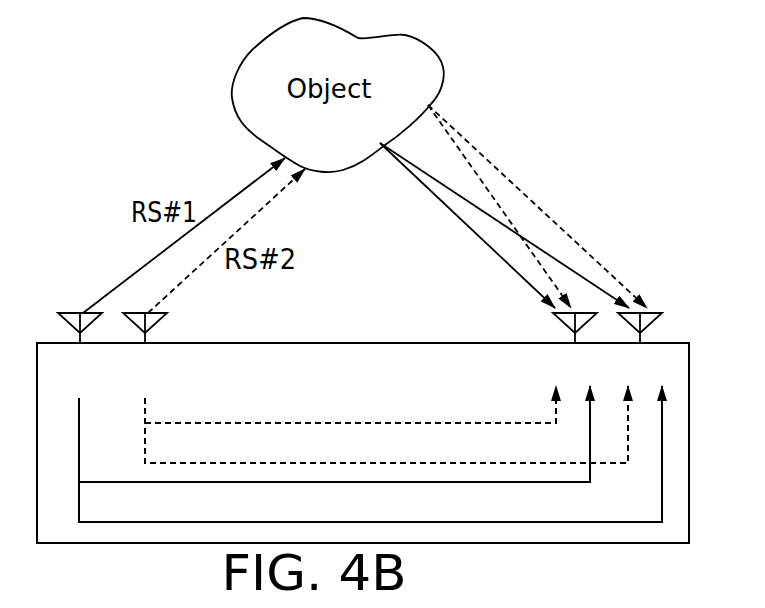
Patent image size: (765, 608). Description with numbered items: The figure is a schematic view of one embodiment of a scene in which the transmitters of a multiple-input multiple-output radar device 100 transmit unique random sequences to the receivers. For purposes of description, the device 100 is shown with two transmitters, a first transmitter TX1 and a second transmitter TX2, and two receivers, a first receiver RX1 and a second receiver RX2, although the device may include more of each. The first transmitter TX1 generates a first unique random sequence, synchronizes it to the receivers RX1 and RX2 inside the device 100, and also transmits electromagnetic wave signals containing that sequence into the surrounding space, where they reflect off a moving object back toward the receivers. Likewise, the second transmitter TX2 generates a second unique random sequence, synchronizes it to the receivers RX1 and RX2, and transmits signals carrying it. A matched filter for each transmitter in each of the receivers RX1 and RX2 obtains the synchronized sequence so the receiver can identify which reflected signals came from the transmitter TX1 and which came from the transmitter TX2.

The multiple-input multiple-output radar device 100 is at (370, 342).
The transmitter 1 TX1 is at (358, 417).
The transmitter 2 TX2 is at (375, 388).
The receiver 1 RX1 is at (572, 350).
The receiver 2 RX2 is at (646, 350).